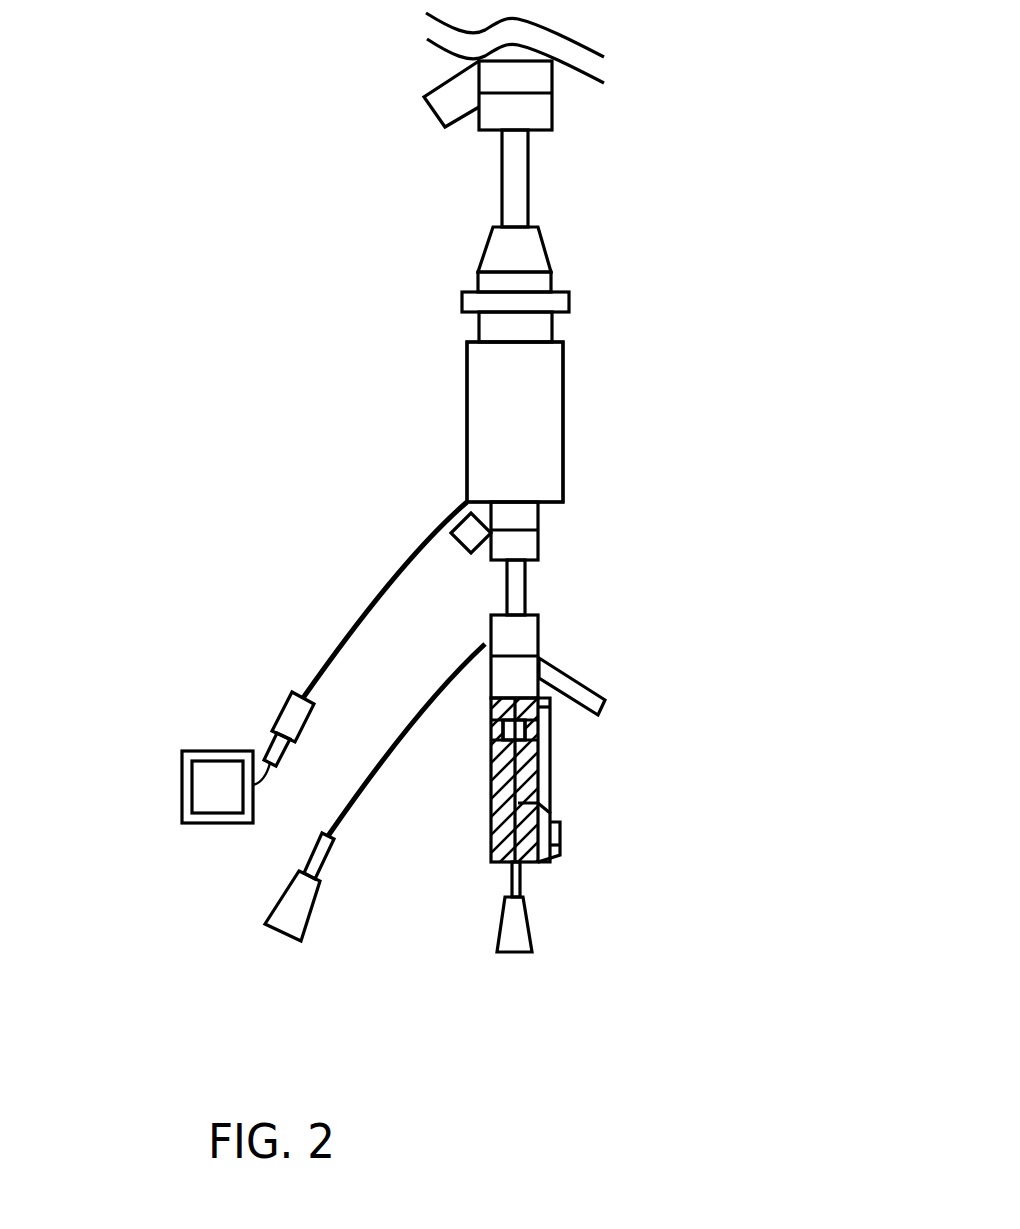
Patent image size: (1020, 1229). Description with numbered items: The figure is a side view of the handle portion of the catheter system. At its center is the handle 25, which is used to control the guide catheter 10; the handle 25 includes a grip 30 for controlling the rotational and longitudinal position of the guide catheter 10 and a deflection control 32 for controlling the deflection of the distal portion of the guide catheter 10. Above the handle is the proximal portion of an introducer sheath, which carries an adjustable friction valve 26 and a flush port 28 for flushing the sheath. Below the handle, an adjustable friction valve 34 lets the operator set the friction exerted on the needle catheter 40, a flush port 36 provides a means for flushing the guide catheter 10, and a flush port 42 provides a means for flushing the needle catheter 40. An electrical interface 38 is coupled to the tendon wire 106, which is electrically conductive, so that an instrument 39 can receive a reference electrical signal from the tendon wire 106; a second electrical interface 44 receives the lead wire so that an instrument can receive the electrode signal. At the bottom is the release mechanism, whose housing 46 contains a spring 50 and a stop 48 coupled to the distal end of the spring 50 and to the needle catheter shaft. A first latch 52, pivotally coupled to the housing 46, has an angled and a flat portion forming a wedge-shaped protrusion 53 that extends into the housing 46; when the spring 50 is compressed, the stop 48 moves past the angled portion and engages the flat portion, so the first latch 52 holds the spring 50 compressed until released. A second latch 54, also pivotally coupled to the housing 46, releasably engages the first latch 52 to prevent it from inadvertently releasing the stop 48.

The guide catheter 10 is at (485, 170).
The handle 25 is at (649, 407).
The adjustable friction valve 26 is at (582, 112).
The flush port 28 is at (419, 75).
The grip 30 is at (431, 405).
The deflection control 32 is at (431, 292).
The adjustable friction valve 34 is at (474, 513).
The flush port 36 is at (435, 552).
The electrical interface 38 is at (232, 726).
The instrument 39 is at (182, 777).
The needle catheter 40 is at (543, 588).
The flush port 42 is at (606, 679).
The electrical interface 44 is at (258, 876).
The housing 46 is at (464, 708).
The stop 48 is at (470, 755).
The spring 50 is at (469, 813).
The first latch 52 is at (566, 748).
The wedge-shaped protrusion 53 is at (566, 789).
The second latch 54 is at (578, 843).
The tendon wire 106 is at (425, 542).